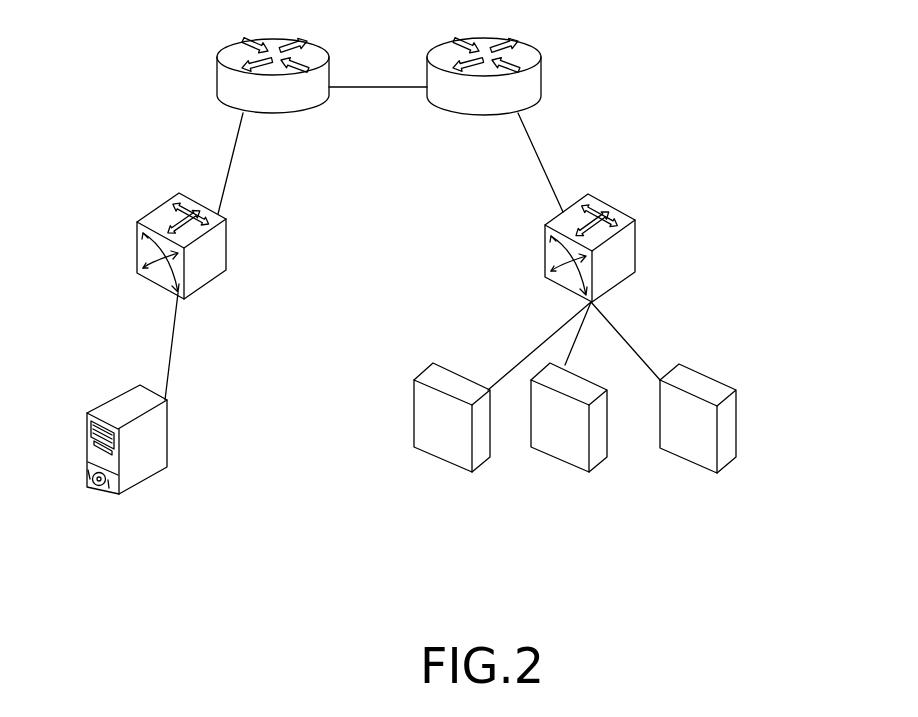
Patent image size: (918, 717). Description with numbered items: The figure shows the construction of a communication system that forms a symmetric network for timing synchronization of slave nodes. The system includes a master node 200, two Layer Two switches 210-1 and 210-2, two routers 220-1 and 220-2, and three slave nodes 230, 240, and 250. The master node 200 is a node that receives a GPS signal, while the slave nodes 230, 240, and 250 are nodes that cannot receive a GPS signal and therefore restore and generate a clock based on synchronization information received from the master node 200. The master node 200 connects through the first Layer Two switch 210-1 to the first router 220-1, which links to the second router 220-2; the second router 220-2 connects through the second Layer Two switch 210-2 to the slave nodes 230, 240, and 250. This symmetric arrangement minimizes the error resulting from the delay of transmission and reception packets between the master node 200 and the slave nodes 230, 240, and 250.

The master node 200 is at (112, 400).
The Layer 2 switch 210-1 is at (137, 243).
The Layer 2 switch 210-2 is at (635, 242).
The router 220-1 is at (217, 72).
The router 220-2 is at (542, 76).
The slave node 230 is at (465, 378).
The slave node 240 is at (578, 378).
The slave node 250 is at (708, 378).